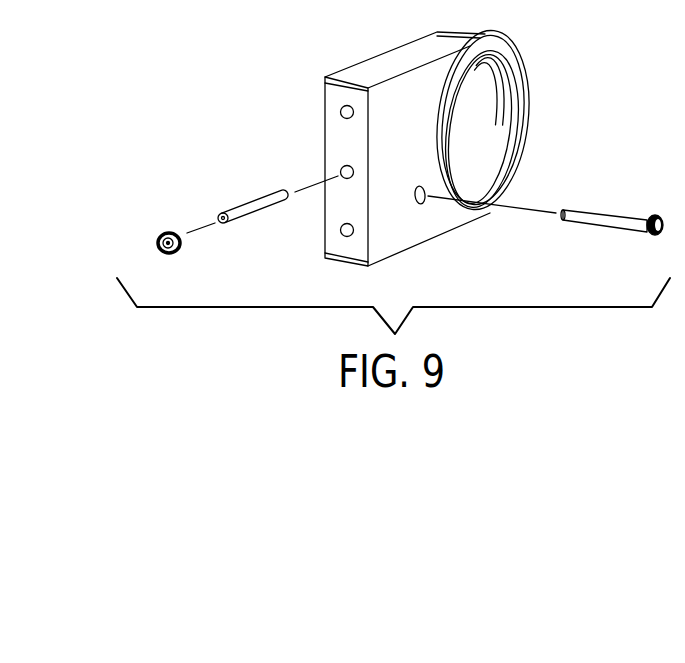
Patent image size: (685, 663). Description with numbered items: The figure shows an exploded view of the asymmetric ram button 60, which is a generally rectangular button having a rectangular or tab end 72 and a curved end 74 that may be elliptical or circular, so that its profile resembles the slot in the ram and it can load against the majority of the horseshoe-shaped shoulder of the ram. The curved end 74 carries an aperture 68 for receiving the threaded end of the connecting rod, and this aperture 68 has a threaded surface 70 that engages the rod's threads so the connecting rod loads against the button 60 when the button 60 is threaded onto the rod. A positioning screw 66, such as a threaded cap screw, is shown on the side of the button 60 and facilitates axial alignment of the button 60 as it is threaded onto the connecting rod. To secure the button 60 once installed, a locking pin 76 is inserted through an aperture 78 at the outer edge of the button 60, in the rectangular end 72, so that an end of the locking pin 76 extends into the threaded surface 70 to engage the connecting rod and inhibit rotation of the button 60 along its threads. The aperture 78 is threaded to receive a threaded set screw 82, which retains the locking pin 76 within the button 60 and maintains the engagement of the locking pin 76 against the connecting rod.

The asymmetric ram button 60 is at (397, 57).
The positioning screw 66 is at (607, 213).
The aperture 68 is at (501, 157).
The threaded surface 70 is at (494, 66).
The rectangular end 72 is at (320, 139).
The curved end 74 is at (533, 115).
The locking pin 76 is at (253, 203).
The aperture 78 is at (345, 179).
The threaded set screw 82 is at (172, 232).